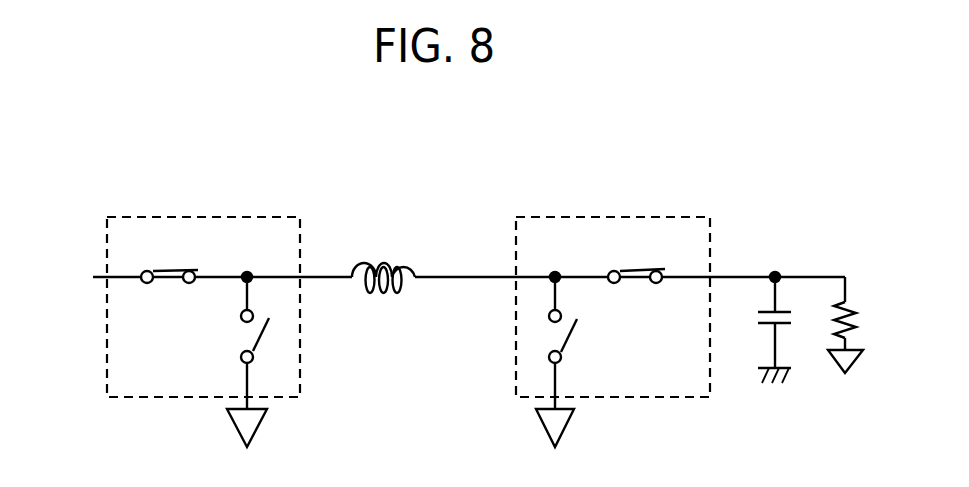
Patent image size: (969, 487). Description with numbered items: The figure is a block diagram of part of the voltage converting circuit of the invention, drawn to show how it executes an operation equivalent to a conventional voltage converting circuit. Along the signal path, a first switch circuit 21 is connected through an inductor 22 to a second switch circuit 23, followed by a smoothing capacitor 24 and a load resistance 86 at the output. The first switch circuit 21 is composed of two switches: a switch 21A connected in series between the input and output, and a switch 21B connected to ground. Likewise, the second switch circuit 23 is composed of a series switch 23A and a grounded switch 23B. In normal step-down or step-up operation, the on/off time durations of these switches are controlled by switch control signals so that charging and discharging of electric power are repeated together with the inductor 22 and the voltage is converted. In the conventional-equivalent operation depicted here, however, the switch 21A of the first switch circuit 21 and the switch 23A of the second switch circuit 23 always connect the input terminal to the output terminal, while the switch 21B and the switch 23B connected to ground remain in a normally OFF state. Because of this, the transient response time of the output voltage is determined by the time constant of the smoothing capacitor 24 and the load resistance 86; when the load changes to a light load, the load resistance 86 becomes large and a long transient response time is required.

The first switch circuit 21 is at (167, 215).
The switch 21A is at (153, 290).
The switch 21B is at (272, 332).
The inductor 22 is at (383, 253).
The second switch circuit 23 is at (570, 215).
The switch 23A is at (648, 265).
The switch 23B is at (578, 346).
The smoothing capacitor 24 is at (793, 317).
The load resistance 86 is at (857, 318).